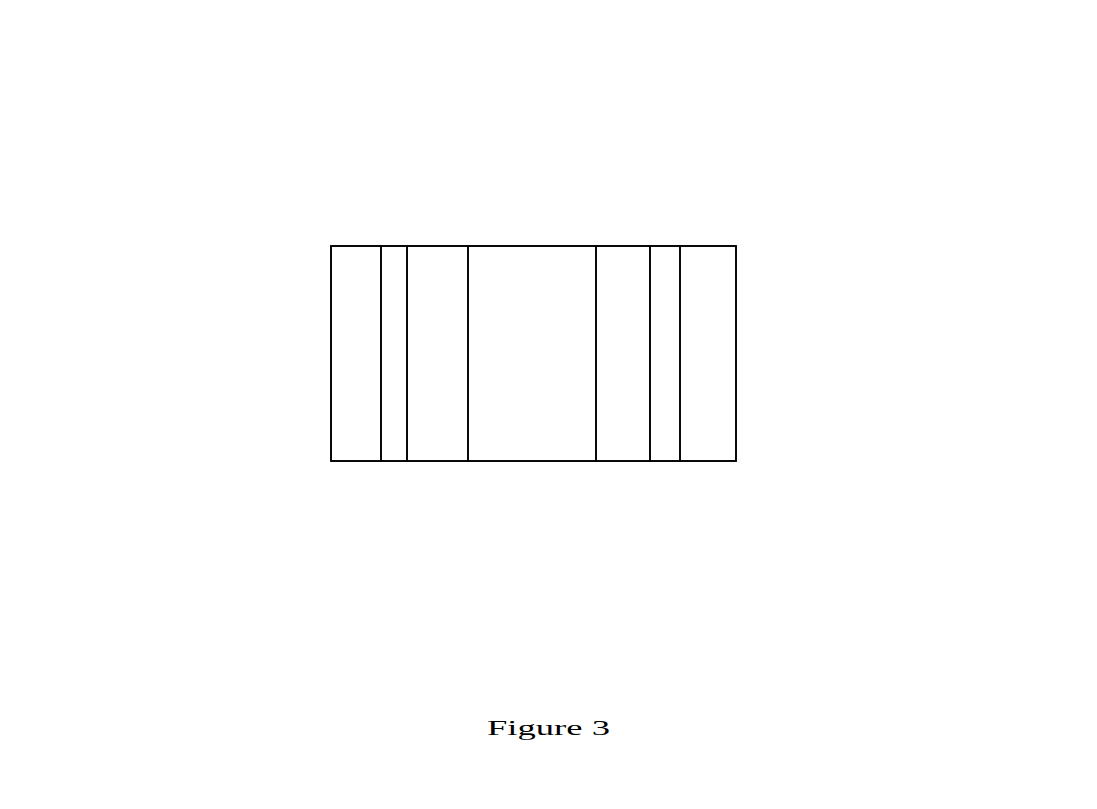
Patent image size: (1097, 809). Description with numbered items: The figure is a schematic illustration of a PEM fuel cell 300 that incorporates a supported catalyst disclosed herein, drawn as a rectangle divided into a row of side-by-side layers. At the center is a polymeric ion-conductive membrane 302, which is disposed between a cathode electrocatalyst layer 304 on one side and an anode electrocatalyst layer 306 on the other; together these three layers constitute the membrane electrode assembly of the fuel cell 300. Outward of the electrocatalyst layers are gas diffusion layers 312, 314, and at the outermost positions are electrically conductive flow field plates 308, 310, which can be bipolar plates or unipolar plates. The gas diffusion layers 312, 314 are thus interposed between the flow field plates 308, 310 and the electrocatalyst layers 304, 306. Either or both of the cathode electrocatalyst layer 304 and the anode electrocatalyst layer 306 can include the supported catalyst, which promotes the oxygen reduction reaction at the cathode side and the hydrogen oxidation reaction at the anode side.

The PEM fuel cell 300 is at (792, 96).
The polymeric ion-conductive membrane 302 is at (530, 438).
The cathode electrocatalyst layer 304 is at (634, 451).
The anode electrocatalyst layer 306 is at (430, 450).
The flow field plate 308 is at (735, 357).
The flow field plate 310 is at (330, 357).
The gas diffusion layer 312 is at (682, 196).
The gas diffusion layer 314 is at (390, 236).